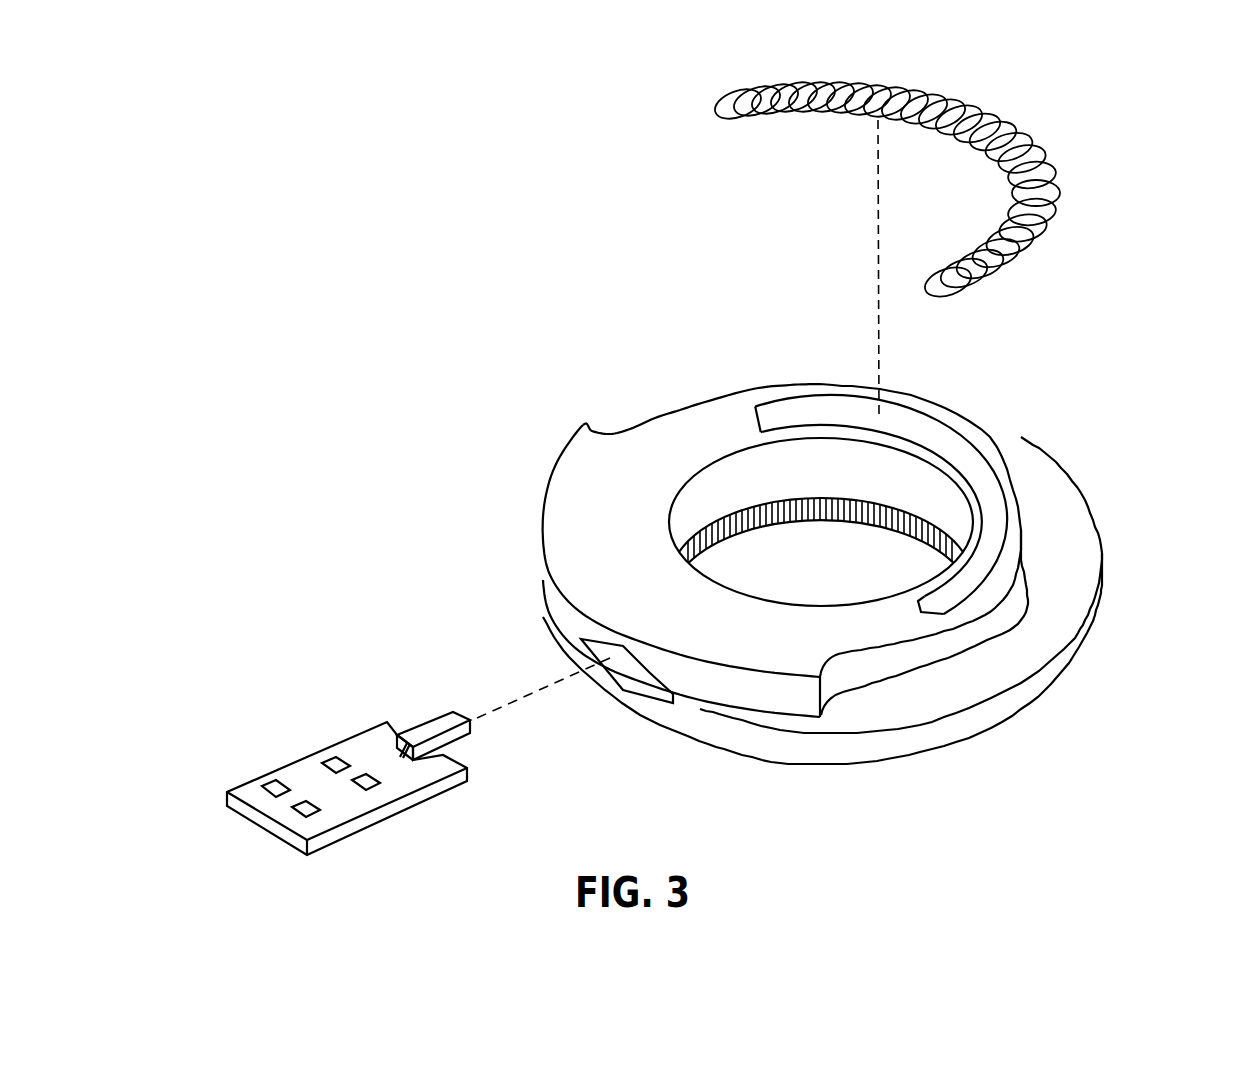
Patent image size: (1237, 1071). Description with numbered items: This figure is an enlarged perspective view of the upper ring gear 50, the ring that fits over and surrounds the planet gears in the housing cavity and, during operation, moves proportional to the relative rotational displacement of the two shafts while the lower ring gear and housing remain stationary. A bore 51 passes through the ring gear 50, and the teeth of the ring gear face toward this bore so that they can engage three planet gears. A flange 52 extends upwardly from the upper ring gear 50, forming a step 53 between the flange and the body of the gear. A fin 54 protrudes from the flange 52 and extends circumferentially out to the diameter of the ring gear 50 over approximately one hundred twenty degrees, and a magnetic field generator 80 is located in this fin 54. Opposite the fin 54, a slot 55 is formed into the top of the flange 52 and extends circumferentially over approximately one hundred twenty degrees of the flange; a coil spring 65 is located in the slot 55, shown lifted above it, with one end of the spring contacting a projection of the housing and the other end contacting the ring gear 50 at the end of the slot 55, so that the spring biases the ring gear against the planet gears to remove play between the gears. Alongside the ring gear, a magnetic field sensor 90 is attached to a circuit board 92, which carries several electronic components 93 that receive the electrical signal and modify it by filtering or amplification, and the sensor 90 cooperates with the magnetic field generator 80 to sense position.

The upper ring gear 50 is at (985, 730).
The bore 51 is at (753, 560).
The flange 52 is at (977, 618).
The step 53 is at (1065, 535).
The fin 54 is at (603, 493).
The slot 55 is at (980, 480).
The coil spring 65 is at (965, 122).
The magnetic field generator 80 is at (548, 613).
The magnetic field sensor 90 is at (437, 725).
The circuit board 92 is at (252, 820).
The electronic components 93 is at (270, 787).